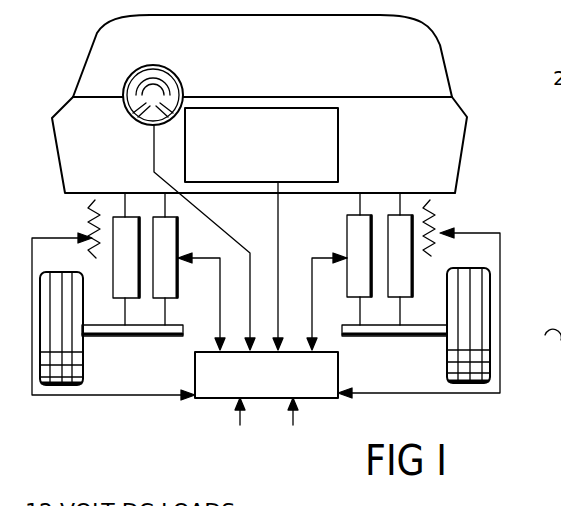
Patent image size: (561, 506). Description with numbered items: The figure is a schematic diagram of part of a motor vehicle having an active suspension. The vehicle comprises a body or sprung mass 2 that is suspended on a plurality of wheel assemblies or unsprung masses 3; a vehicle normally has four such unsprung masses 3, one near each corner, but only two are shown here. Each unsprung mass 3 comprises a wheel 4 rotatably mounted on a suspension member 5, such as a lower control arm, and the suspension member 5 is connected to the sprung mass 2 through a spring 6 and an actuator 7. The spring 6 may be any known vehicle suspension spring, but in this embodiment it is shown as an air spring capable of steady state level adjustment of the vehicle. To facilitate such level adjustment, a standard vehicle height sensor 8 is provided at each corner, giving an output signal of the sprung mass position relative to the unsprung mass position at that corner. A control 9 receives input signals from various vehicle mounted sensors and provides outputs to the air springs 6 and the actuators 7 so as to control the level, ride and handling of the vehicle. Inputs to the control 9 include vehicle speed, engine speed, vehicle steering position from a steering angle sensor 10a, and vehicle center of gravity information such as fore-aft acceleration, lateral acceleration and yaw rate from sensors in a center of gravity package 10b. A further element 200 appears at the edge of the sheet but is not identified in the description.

The body or sprung mass 2 is at (285, 104).
The steering angle sensor 10a is at (125, 78).
The center of gravity package 10b is at (340, 120).
The actuator 7 is at (158, 217).
The spring 6 is at (117, 217).
The vehicle height sensor 8 is at (85, 228).
The wheel 4 is at (55, 384).
The suspension member 5 is at (105, 336).
The wheel assembly or unsprung mass 3 is at (265, 368).
The control 9 is at (202, 400).
The electrical load 200 is at (541, 323).